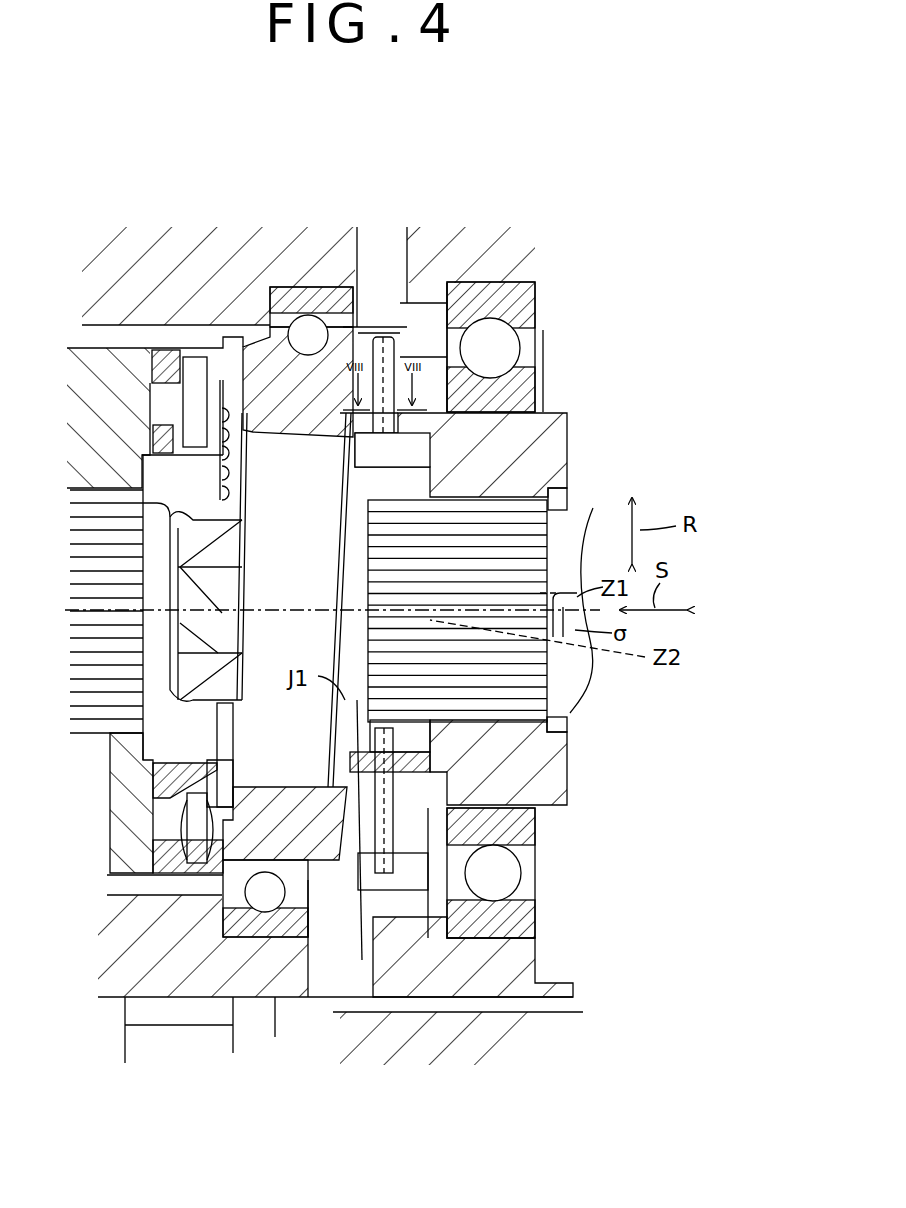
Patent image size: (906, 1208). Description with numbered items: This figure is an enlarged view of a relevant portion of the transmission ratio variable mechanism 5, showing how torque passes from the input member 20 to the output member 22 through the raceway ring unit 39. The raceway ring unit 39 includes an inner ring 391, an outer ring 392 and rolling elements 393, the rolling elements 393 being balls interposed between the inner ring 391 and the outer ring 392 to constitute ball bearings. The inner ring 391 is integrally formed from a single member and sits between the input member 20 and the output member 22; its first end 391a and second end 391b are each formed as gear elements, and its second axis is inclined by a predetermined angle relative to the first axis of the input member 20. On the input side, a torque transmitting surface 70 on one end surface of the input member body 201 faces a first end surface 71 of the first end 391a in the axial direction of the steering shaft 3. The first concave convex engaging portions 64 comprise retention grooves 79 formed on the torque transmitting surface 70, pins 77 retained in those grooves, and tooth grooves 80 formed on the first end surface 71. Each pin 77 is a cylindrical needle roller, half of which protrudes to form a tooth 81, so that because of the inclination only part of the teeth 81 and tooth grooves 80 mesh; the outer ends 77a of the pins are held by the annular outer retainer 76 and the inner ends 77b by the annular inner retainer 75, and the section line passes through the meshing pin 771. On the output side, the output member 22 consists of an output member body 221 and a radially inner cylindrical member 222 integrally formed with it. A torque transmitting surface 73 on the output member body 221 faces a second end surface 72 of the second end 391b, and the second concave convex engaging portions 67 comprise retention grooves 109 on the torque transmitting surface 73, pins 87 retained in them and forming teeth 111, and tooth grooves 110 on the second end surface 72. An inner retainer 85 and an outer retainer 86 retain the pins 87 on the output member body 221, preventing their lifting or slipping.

The raceway ring unit 39 is at (304, 276).
The outer ring 392 is at (275, 295).
The rolling elements 393 is at (307, 330).
The inner ring 391 is at (340, 300).
The first end 391a is at (383, 327).
The second end 391b is at (240, 343).
The pin 771 is at (388, 330).
The output member 22 is at (98, 345).
The transmission ratio variable mechanism 5 is at (558, 408).
The input member 20 is at (572, 430).
The steering shaft 3 is at (575, 497).
The input member body 201 is at (590, 690).
The cylindrical member 222 is at (138, 735).
The torque transmitting surface 73 is at (185, 795).
The inner retainer 85 is at (178, 764).
The teeth 111 is at (213, 770).
The second end surface 72 is at (228, 800).
The first end surface 71 is at (338, 782).
The teeth 81 is at (360, 770).
The inner retainer 75 is at (470, 775).
The inner ends 77b is at (450, 795).
The torque transmitting surface 70 is at (567, 797).
The outer ends 77a is at (470, 865).
The output member body 221 is at (137, 876).
The outer retainer 86 is at (150, 915).
The retention grooves 109 is at (185, 800).
The pins 87 is at (200, 865).
The tooth grooves 110 is at (217, 845).
The second concave convex engaging portions 67 is at (108, 1105).
The tooth grooves 80 is at (333, 790).
The pins 77 is at (380, 775).
The retention grooves 79 is at (418, 850).
The first concave convex engaging portions 64 is at (285, 1115).
The outer retainer 76 is at (392, 890).